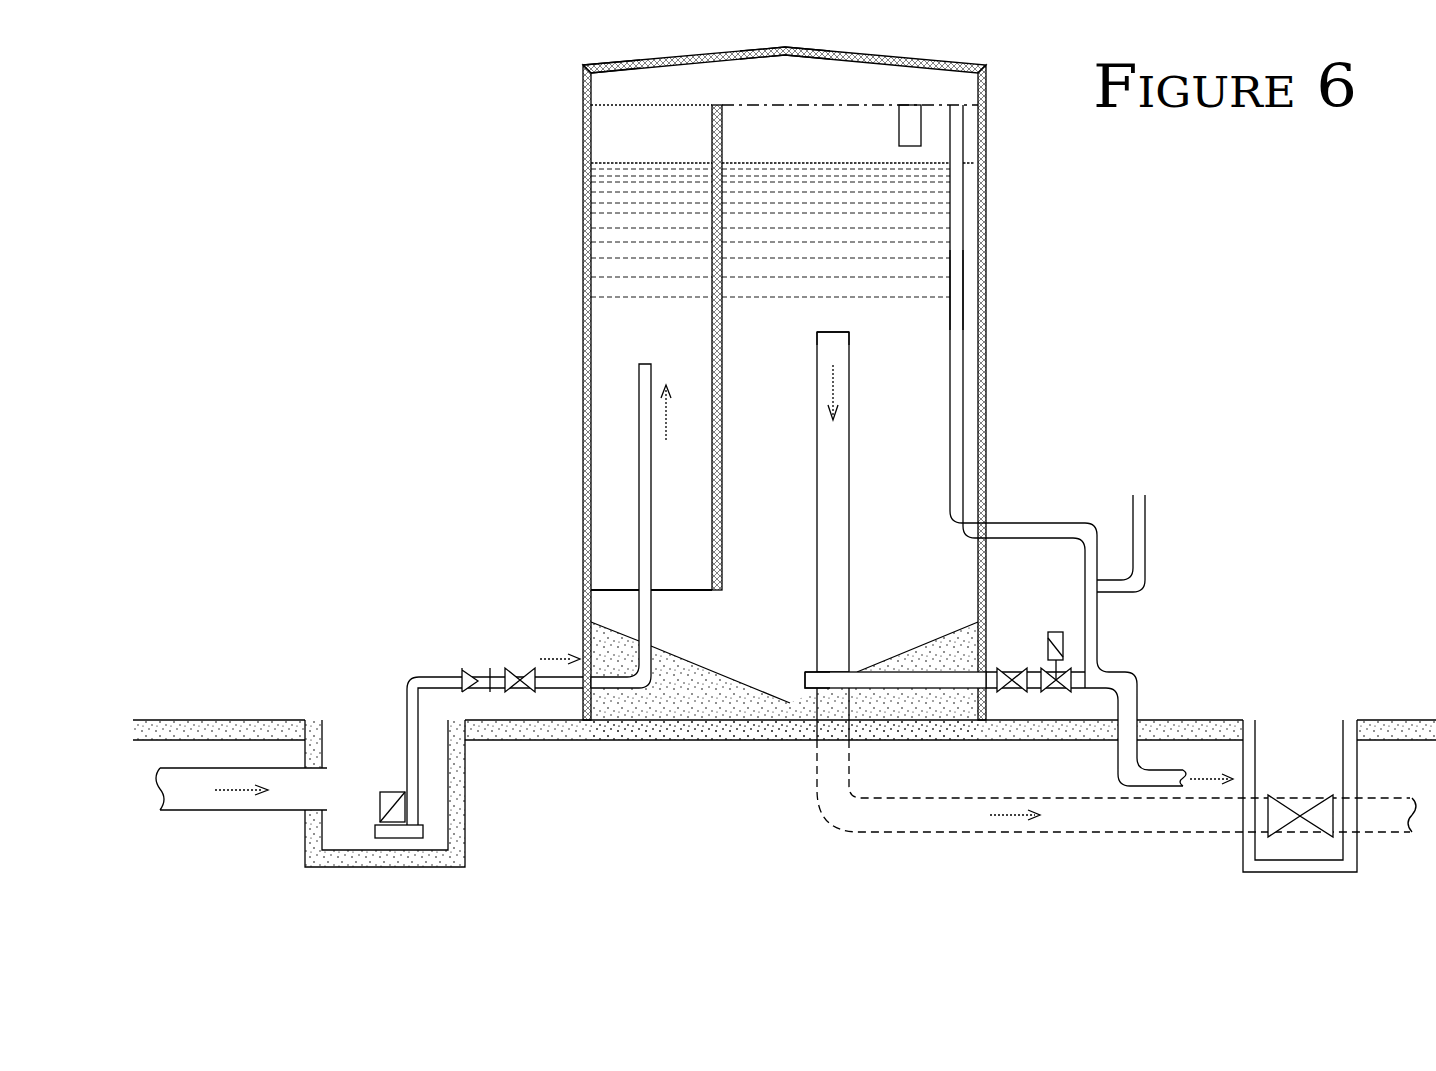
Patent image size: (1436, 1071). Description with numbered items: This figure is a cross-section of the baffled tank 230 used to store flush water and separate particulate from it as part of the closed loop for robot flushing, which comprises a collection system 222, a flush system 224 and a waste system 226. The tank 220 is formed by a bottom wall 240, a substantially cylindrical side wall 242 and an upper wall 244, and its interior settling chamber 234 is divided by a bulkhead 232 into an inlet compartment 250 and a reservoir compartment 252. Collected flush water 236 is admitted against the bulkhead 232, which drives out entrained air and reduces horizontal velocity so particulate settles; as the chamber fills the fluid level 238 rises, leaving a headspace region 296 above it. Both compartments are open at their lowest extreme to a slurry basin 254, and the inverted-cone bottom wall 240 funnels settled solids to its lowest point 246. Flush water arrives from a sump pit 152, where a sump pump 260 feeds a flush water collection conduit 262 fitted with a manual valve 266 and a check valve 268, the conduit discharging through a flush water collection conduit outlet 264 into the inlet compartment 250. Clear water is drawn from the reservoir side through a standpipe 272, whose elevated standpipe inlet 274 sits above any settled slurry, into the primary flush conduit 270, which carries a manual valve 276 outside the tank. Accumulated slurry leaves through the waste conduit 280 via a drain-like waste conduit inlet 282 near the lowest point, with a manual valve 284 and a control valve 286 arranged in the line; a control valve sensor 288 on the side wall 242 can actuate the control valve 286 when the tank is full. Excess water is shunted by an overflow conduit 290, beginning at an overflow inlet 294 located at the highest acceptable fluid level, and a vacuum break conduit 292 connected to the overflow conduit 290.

The sump pit 152 is at (345, 825).
The separation tank 220 is at (766, 393).
The flush water collection system 222 is at (375, 660).
The flush system 224 is at (1330, 880).
The waste system 226 is at (1145, 605).
The baffled tank 230 is at (583, 130).
The bulkhead 232 is at (718, 388).
The settling chamber 234 is at (742, 73).
The collected flush water 236 is at (612, 222).
The fluid level 238 is at (631, 163).
The bottom wall 240 is at (908, 650).
The side wall 242 is at (583, 458).
The upper wall 244 is at (630, 62).
The lowest point 246 is at (790, 680).
The inlet compartment 250 is at (643, 330).
The reservoir compartment 252 is at (876, 332).
The slurry basin 254 is at (700, 640).
The sump pump 260 is at (388, 790).
The flush water collection conduit 262 is at (558, 700).
The flush water collection conduit outlet 264 is at (645, 364).
The manual valve 266 is at (517, 668).
The check valve 268 is at (478, 676).
The primary flush conduit 270 is at (1000, 834).
The standpipe 272 is at (840, 463).
The standpipe inlet 274 is at (838, 332).
The manual valve 276 is at (1283, 800).
The waste conduit 280 is at (905, 688).
The waste conduit inlet 282 is at (805, 682).
The manual valve 284 is at (1010, 672).
The control valve 286 is at (1058, 632).
The control valve sensor 288 is at (910, 112).
The overflow conduit 290 is at (963, 291).
The vacuum break conduit 292 is at (1097, 640).
The overflow inlet 294 is at (962, 108).
The headspace region 296 is at (817, 73).